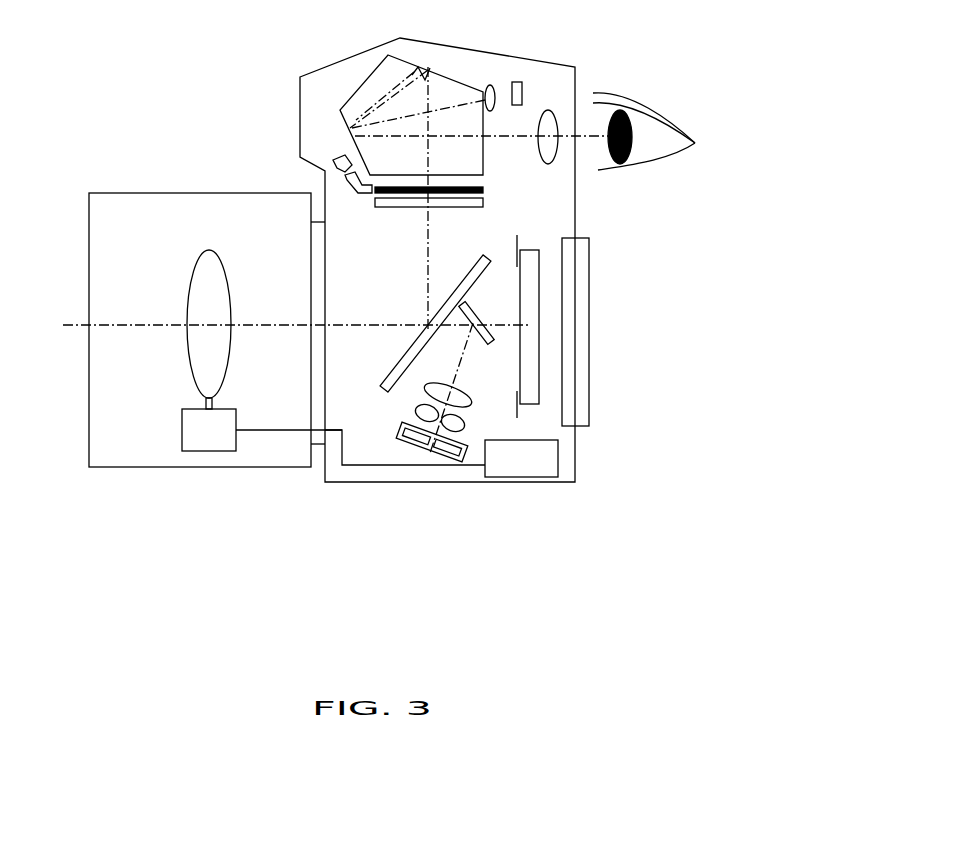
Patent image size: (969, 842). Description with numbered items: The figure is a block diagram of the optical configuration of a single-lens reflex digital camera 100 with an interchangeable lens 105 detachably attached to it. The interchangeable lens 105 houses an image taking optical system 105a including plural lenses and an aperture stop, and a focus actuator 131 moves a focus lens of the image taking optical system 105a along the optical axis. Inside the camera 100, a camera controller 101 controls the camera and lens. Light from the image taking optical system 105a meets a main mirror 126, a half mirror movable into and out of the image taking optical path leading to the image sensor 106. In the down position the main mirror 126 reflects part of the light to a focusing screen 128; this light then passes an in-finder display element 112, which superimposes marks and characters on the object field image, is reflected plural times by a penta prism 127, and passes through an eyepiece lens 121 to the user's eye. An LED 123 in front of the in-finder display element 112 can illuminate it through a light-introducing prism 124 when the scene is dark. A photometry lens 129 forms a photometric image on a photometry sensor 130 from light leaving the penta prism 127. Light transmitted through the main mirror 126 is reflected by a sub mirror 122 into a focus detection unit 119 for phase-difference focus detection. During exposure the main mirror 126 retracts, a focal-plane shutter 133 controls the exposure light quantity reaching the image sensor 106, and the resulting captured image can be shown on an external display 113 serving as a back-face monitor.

The camera 100 is at (380, 482).
The camera controller 101 is at (523, 467).
The interchangeable lens 105 is at (173, 193).
The image taking optical system 105a is at (192, 278).
The image sensor 106 is at (540, 365).
The in-finder display element 112 is at (483, 190).
The external display 113 is at (590, 350).
The focus detection unit 119 is at (433, 447).
The eyepiece lens 121 is at (557, 113).
The sub mirror 122 is at (472, 308).
The LED 123 is at (337, 158).
The light-introducing prism 124 is at (358, 193).
The main mirror 126 is at (393, 368).
The penta prism 127 is at (360, 83).
The focusing screen 128 is at (483, 202).
The photometry lens 129 is at (488, 87).
The photometry sensor 130 is at (512, 82).
The focus actuator 131 is at (217, 437).
The focal-plane shutter 133 is at (523, 408).